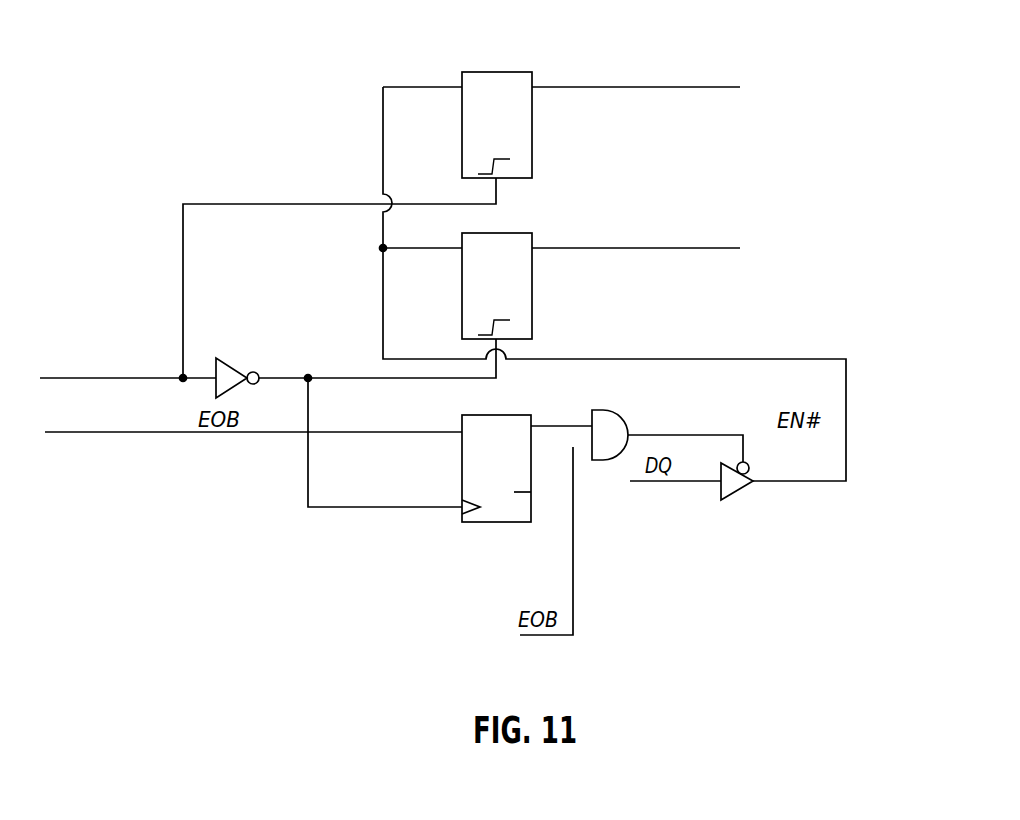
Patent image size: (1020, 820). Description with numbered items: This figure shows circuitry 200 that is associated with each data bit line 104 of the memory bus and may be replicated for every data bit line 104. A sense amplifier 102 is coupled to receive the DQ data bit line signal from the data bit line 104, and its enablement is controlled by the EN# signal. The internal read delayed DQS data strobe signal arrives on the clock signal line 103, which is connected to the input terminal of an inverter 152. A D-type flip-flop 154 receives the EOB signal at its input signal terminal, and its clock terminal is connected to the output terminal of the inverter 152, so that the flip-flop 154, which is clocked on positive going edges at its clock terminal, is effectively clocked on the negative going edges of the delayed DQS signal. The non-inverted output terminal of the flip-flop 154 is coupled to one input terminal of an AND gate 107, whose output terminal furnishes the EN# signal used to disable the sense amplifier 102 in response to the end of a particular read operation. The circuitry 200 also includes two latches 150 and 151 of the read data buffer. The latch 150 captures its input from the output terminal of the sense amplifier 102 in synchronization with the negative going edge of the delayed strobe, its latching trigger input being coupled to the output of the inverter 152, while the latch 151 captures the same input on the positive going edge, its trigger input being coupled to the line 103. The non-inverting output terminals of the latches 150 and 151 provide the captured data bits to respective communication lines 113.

The circuitry 200 is at (808, 187).
The clock signal line 103 is at (183, 378).
The inverter 152 is at (251, 366).
The latch 151 is at (499, 71).
The latch 150 is at (499, 232).
The communication lines 113 is at (603, 87).
The D-type flip-flop 154 is at (480, 415).
The AND gate 107 is at (623, 418).
The sense amplifier 102 is at (738, 492).
The data bit line 104 is at (665, 481).